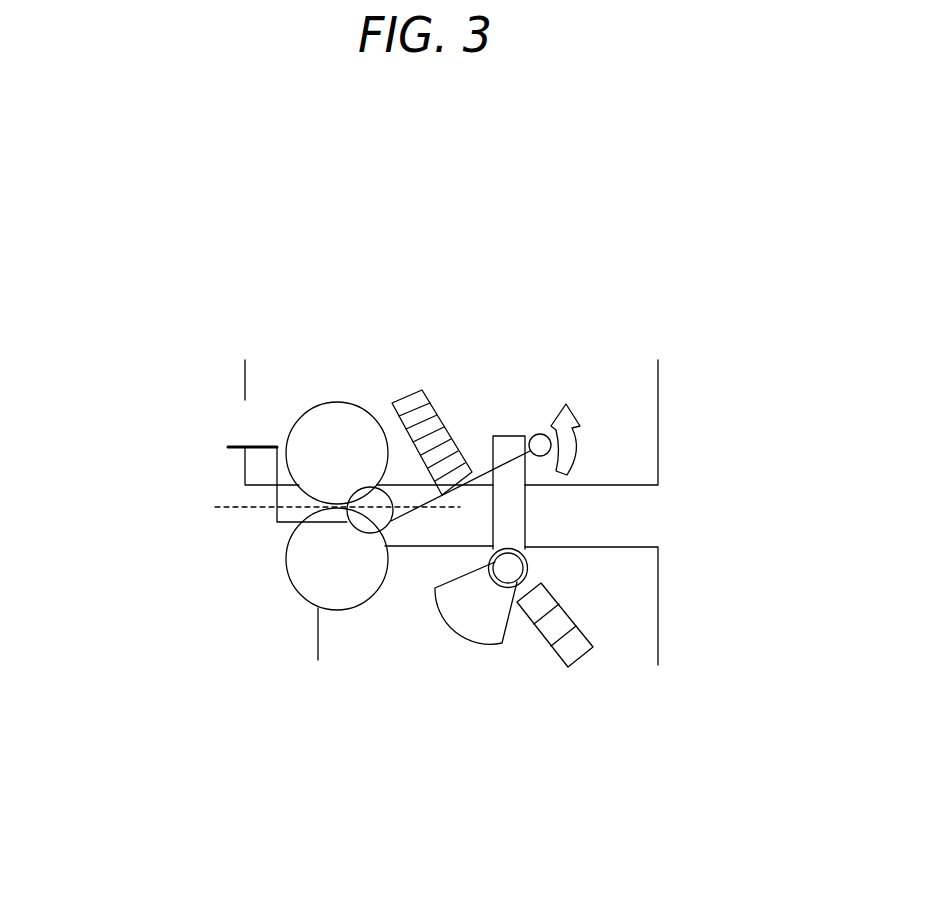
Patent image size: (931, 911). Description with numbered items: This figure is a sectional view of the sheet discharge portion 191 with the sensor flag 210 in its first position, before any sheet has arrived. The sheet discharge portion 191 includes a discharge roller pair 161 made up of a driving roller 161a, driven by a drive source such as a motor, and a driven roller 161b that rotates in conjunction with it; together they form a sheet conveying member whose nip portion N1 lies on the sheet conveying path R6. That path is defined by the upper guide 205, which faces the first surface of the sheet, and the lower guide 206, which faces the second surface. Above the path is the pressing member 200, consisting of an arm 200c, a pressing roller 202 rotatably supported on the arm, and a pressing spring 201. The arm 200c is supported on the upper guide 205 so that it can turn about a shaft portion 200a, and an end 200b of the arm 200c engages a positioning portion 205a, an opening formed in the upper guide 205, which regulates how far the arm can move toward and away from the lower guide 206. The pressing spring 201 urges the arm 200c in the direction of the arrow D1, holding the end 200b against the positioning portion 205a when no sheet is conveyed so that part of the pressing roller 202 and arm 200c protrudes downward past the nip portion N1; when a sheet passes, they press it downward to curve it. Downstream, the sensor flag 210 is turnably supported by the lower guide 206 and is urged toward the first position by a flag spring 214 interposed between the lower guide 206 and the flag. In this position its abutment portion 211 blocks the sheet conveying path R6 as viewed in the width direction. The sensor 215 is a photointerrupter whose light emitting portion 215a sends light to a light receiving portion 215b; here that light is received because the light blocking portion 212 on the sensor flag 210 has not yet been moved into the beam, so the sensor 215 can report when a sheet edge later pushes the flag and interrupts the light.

The sheet discharge portion 191 is at (193, 330).
The discharge roller pair 161 is at (314, 406).
The driving roller 161a is at (340, 403).
The driven roller 161b is at (298, 596).
The pressing member 200 is at (273, 518).
The shaft portion 200a is at (537, 433).
The end of the arm 200b is at (237, 443).
The arm 200c is at (335, 505).
The pressing spring 201 is at (408, 390).
The pressing roller 202 is at (364, 533).
The upper guide 205 is at (658, 422).
The positioning portion 205a is at (242, 450).
The lower guide 206 is at (658, 610).
The sensor flag 210 is at (443, 612).
The abutment portion 211 is at (525, 513).
The light blocking portion 212 is at (511, 588).
The flag spring 214 is at (491, 585).
The sensor 215 is at (583, 664).
The light emitting portion 215a is at (522, 623).
The light receiving portion 215b is at (597, 636).
The nip portion N1 is at (316, 508).
The arrow D1 is at (589, 439).
The sheet conveying path R6 is at (640, 547).